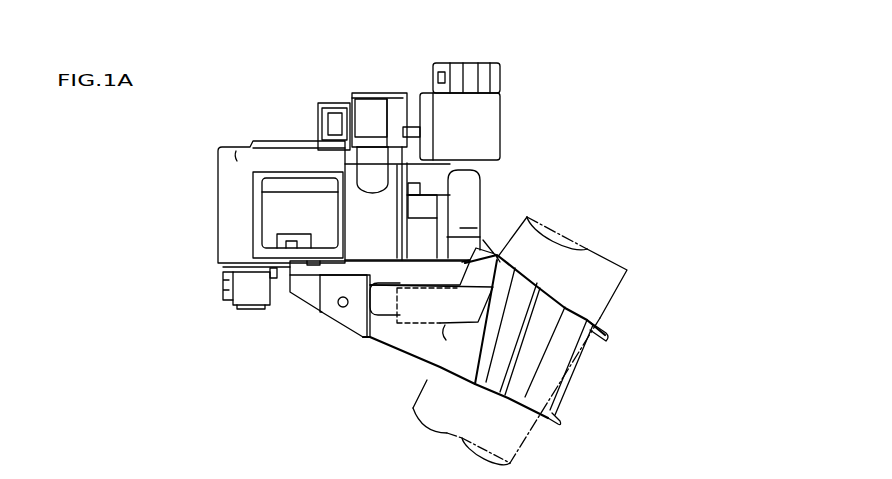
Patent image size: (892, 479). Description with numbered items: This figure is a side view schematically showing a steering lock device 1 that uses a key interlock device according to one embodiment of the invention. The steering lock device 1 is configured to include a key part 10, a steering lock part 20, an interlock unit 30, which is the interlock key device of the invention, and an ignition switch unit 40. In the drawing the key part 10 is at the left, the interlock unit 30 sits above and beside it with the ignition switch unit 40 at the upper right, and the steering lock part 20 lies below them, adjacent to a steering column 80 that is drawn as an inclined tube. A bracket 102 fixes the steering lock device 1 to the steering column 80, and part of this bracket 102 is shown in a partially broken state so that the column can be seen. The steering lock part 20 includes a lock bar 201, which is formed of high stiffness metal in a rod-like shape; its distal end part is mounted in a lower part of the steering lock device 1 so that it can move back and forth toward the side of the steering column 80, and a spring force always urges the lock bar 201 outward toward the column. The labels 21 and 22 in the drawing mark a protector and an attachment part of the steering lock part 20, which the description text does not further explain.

The steering lock device 1 is at (522, 55).
The key part 10 is at (225, 168).
The steering lock part 20 is at (387, 328).
The protector 21 is at (303, 297).
The attachment part 22 is at (340, 308).
The lock bar 201 is at (478, 297).
The interlock unit 30 is at (373, 103).
The ignition switch unit 40 is at (467, 177).
The steering column 80 is at (618, 265).
The bracket 102 is at (607, 330).